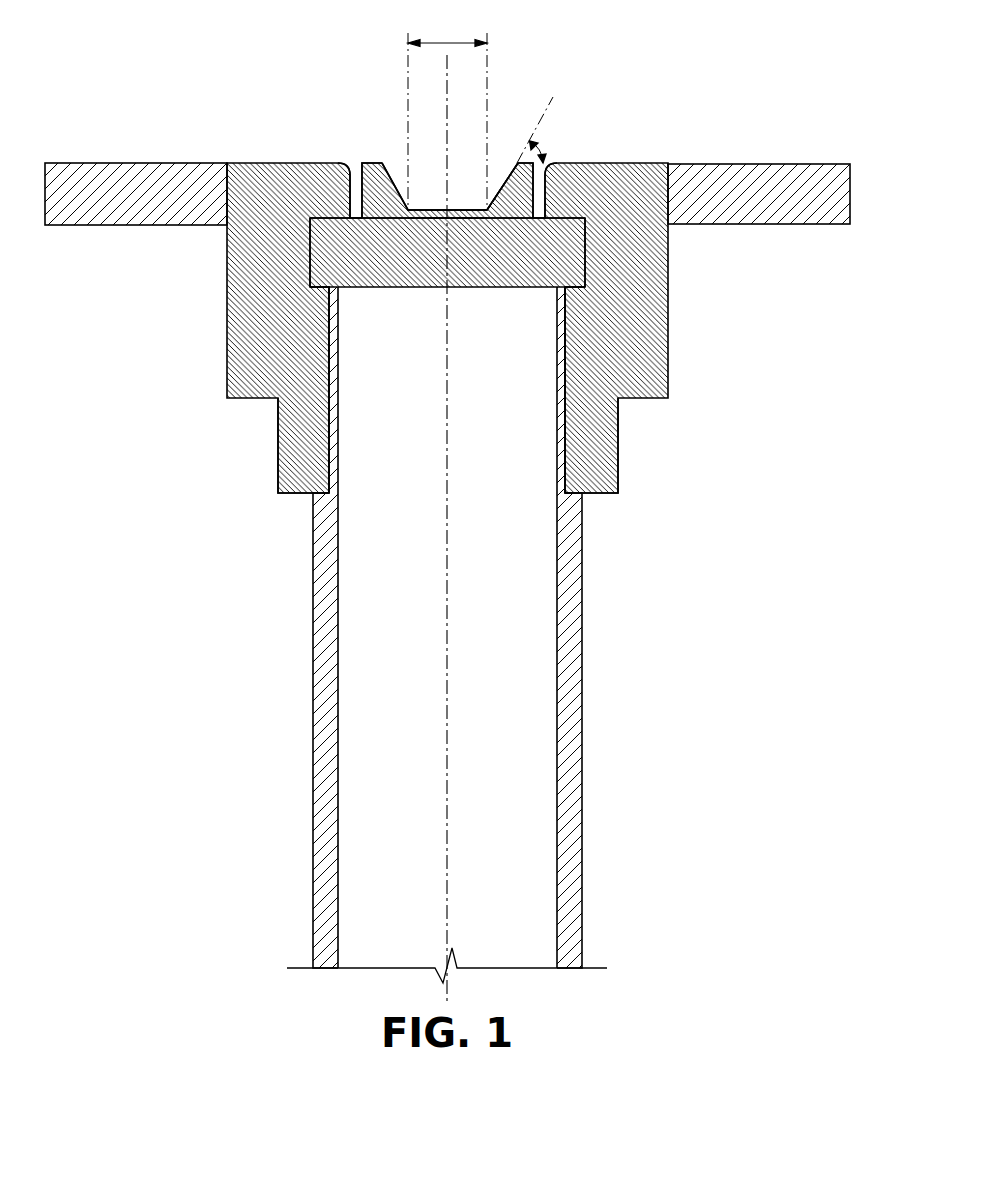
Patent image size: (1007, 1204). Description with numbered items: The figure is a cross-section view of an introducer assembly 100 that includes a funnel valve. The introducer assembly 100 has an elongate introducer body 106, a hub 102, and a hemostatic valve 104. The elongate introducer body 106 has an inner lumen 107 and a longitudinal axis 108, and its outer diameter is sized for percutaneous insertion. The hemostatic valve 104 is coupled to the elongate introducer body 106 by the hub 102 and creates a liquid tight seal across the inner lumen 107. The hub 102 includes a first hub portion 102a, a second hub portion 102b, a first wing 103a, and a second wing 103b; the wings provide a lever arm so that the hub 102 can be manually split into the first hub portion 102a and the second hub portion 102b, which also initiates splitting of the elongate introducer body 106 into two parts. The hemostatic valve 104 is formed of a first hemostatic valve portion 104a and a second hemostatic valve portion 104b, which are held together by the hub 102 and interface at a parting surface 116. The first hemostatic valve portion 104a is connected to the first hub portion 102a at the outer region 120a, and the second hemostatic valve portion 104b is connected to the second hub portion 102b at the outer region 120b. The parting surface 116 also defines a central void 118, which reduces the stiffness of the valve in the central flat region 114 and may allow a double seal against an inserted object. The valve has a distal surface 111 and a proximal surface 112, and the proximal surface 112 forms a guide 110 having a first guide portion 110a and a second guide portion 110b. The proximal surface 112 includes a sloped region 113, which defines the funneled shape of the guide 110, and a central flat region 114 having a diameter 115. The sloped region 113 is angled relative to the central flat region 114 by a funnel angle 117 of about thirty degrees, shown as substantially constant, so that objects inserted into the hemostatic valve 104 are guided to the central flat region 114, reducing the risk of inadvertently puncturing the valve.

The introducer assembly 100 is at (757, 98).
The hub 102 is at (243, 156).
The first hub portion 102a is at (290, 438).
The second hub portion 102b is at (607, 445).
The first wing 103a is at (95, 180).
The second wing 103b is at (782, 187).
The hemostatic valve 104 is at (446, 292).
The first hemostatic valve portion 104a is at (307, 252).
The second hemostatic valve portion 104b is at (562, 219).
The elongate introducer body 106 is at (510, 529).
The inner lumen 107 is at (495, 738).
The longitudinal axis 108 is at (447, 515).
The guide 110 is at (368, 200).
The first guide portion 110a is at (368, 197).
The second guide portion 110b is at (525, 190).
The distal surface 111 is at (383, 287).
The proximal surface 112 is at (420, 180).
The sloped region 113 is at (496, 194).
The central flat region 114 is at (453, 210).
The diameter 115 is at (447, 113).
The parting surface 116 is at (447, 223).
The funnel angle 117 is at (543, 148).
The central void 118 is at (445, 250).
The outer region 120a is at (325, 216).
The outer region 120b is at (558, 217).